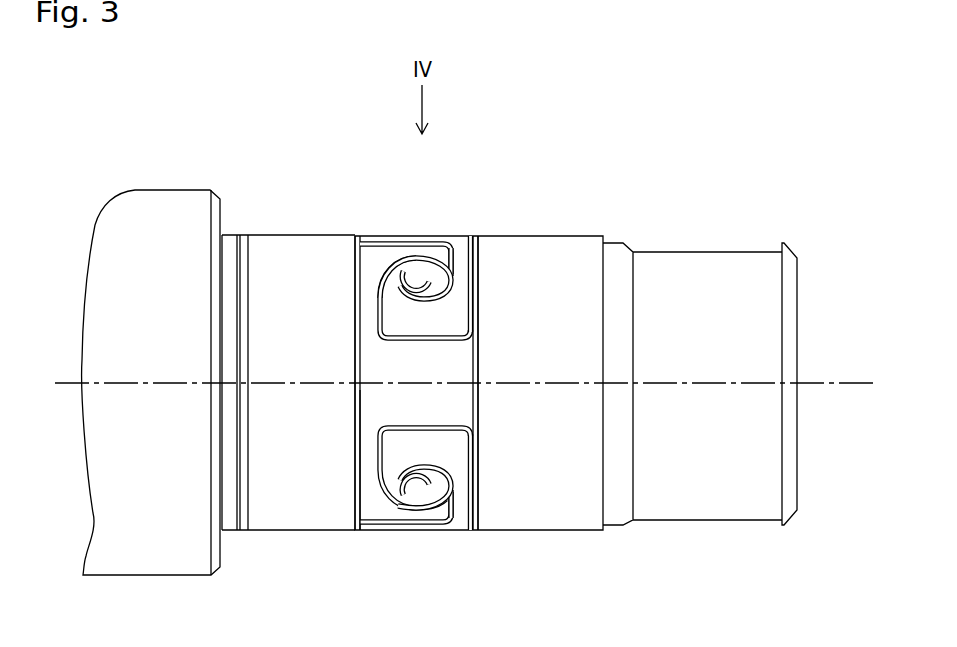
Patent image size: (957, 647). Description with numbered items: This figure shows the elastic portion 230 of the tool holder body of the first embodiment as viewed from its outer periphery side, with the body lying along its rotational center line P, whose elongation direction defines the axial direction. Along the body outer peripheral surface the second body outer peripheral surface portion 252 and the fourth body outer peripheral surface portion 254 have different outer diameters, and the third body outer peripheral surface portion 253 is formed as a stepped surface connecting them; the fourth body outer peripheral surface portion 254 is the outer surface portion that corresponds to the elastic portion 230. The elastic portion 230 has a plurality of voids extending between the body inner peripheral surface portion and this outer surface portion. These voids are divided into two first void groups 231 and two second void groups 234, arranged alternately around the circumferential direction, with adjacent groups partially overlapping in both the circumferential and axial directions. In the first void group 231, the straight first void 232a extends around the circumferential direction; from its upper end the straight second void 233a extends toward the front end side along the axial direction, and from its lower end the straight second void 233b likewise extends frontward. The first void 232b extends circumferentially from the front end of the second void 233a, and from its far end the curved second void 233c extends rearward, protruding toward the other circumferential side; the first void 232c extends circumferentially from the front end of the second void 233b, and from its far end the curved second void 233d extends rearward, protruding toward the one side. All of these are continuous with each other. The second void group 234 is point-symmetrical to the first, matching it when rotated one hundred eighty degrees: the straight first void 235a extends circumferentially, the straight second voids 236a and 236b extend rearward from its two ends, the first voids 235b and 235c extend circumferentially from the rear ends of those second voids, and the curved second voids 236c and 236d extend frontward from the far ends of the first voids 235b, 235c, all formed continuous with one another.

The elastic portion 230 is at (444, 221).
The first void group 231 is at (338, 371).
The first void 232a is at (358, 411).
The first void 232b is at (453, 265).
The first void 232c is at (453, 508).
The second void 233a is at (418, 243).
The second void 233b is at (383, 525).
The second void 233c is at (418, 299).
The second void 233d is at (422, 467).
The second void group 234 is at (500, 302).
The first void 235a is at (472, 307).
The first void 235b is at (379, 462).
The first void 235c is at (379, 300).
The second void 236a is at (440, 427).
The second void 236b is at (437, 340).
The second void 236c is at (413, 510).
The second void 236d is at (403, 258).
The second body outer peripheral surface portion 252 is at (170, 190).
The third body outer peripheral surface portion 253 is at (223, 222).
The fourth body outer peripheral surface portion 254 is at (301, 235).
The rotational center line P is at (455, 384).